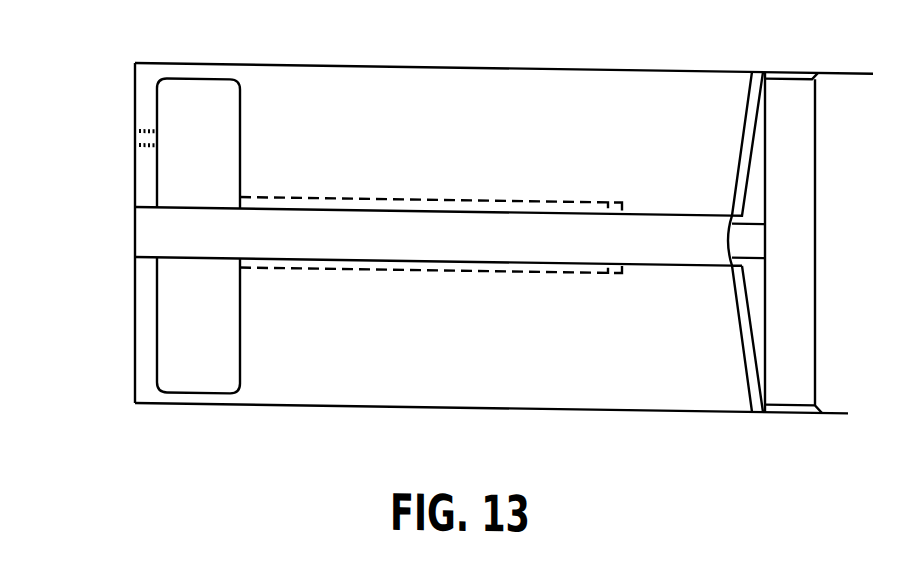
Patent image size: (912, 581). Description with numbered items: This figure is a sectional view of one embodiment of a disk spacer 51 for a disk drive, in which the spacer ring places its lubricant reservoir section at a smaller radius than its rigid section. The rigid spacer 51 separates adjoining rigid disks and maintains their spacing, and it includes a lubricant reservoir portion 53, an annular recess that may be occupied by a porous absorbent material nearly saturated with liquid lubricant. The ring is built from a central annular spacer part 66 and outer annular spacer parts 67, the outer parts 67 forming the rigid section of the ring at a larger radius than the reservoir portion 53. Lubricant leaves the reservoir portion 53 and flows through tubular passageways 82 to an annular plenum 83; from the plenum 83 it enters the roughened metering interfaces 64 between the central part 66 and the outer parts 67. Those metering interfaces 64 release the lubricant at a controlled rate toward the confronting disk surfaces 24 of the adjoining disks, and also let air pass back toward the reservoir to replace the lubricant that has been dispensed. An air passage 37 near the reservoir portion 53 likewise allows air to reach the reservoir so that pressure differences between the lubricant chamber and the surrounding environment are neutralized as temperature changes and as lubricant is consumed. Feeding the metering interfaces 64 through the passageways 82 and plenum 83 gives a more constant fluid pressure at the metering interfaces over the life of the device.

The disk surface 24 is at (837, 65).
The air passage 37 is at (133, 140).
The spacer 51 is at (122, 187).
The lubricant reservoir portion 53 is at (190, 95).
The metering interface 64 is at (670, 204).
The central annular spacer part 66 is at (307, 248).
The outer annular spacer part 67 is at (307, 152).
The tubular passageway 82 is at (413, 194).
The annular plenum 83 is at (623, 263).